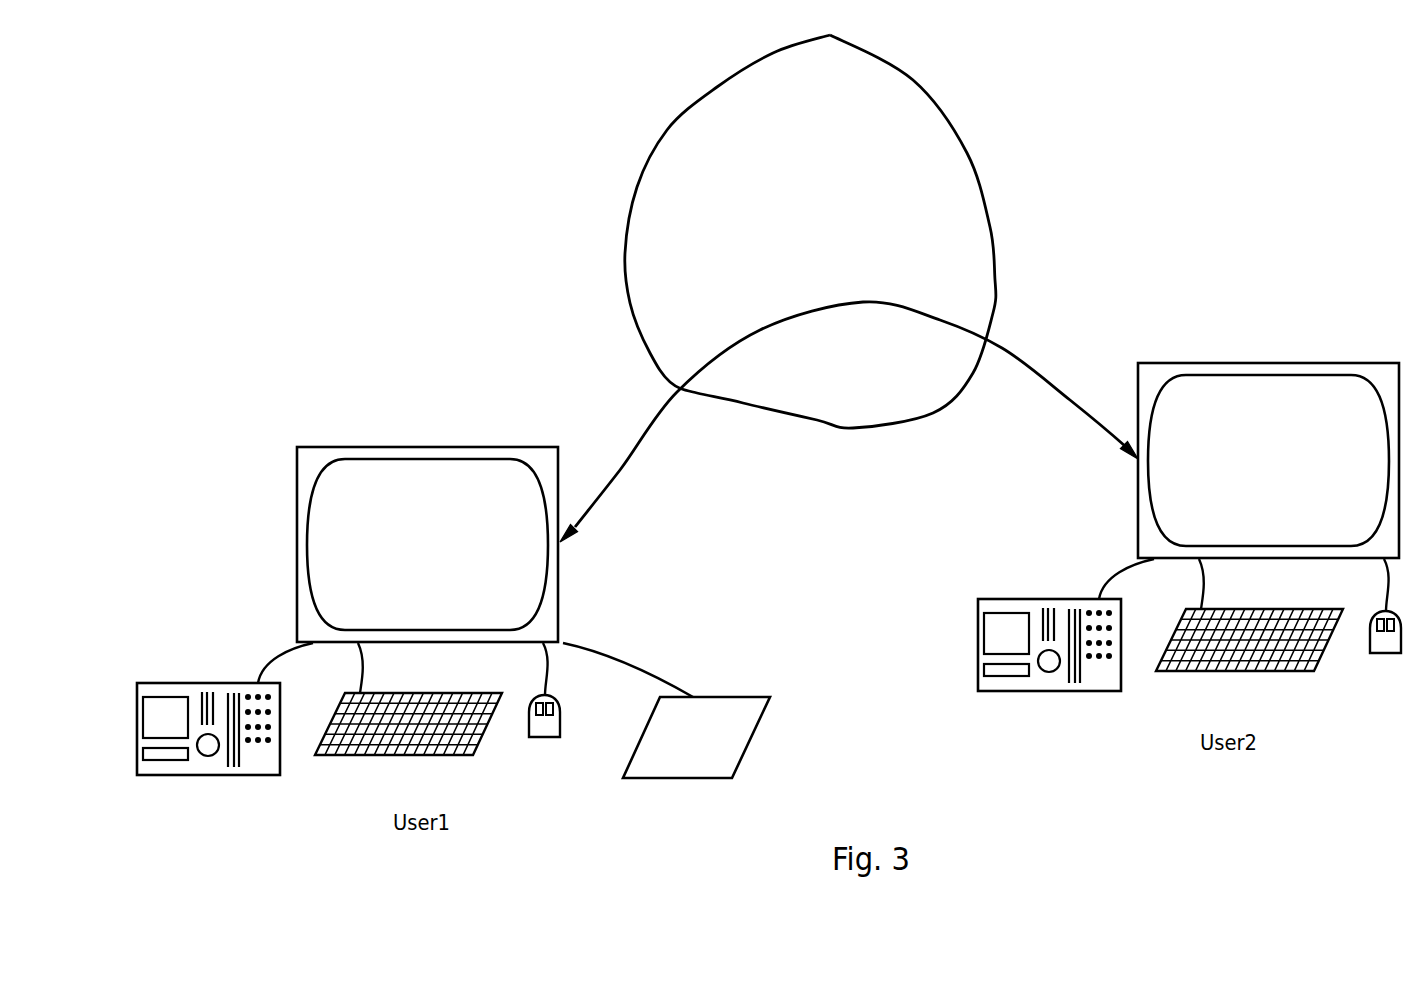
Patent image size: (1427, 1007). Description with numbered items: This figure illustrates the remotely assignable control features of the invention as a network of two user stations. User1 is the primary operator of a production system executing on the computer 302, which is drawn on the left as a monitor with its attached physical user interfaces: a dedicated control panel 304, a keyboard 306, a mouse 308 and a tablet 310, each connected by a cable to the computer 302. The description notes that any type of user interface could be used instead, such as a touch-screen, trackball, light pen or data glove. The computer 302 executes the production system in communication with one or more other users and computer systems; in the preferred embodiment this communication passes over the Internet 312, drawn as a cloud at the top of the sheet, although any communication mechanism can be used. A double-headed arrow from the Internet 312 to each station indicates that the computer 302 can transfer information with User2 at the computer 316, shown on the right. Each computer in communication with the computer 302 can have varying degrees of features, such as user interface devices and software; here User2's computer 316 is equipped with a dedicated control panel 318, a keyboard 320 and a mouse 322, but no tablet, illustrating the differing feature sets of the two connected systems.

The computer 302 is at (308, 443).
The dedicated control panel 304 is at (237, 775).
The keyboard 306 is at (447, 755).
The mouse 308 is at (533, 737).
The tablet 310 is at (700, 778).
The Internet 312 is at (878, 428).
The computer 316 is at (1268, 443).
The dedicated control panel 318 is at (1066, 640).
The keyboard 320 is at (1249, 630).
The mouse 322 is at (1398, 621).